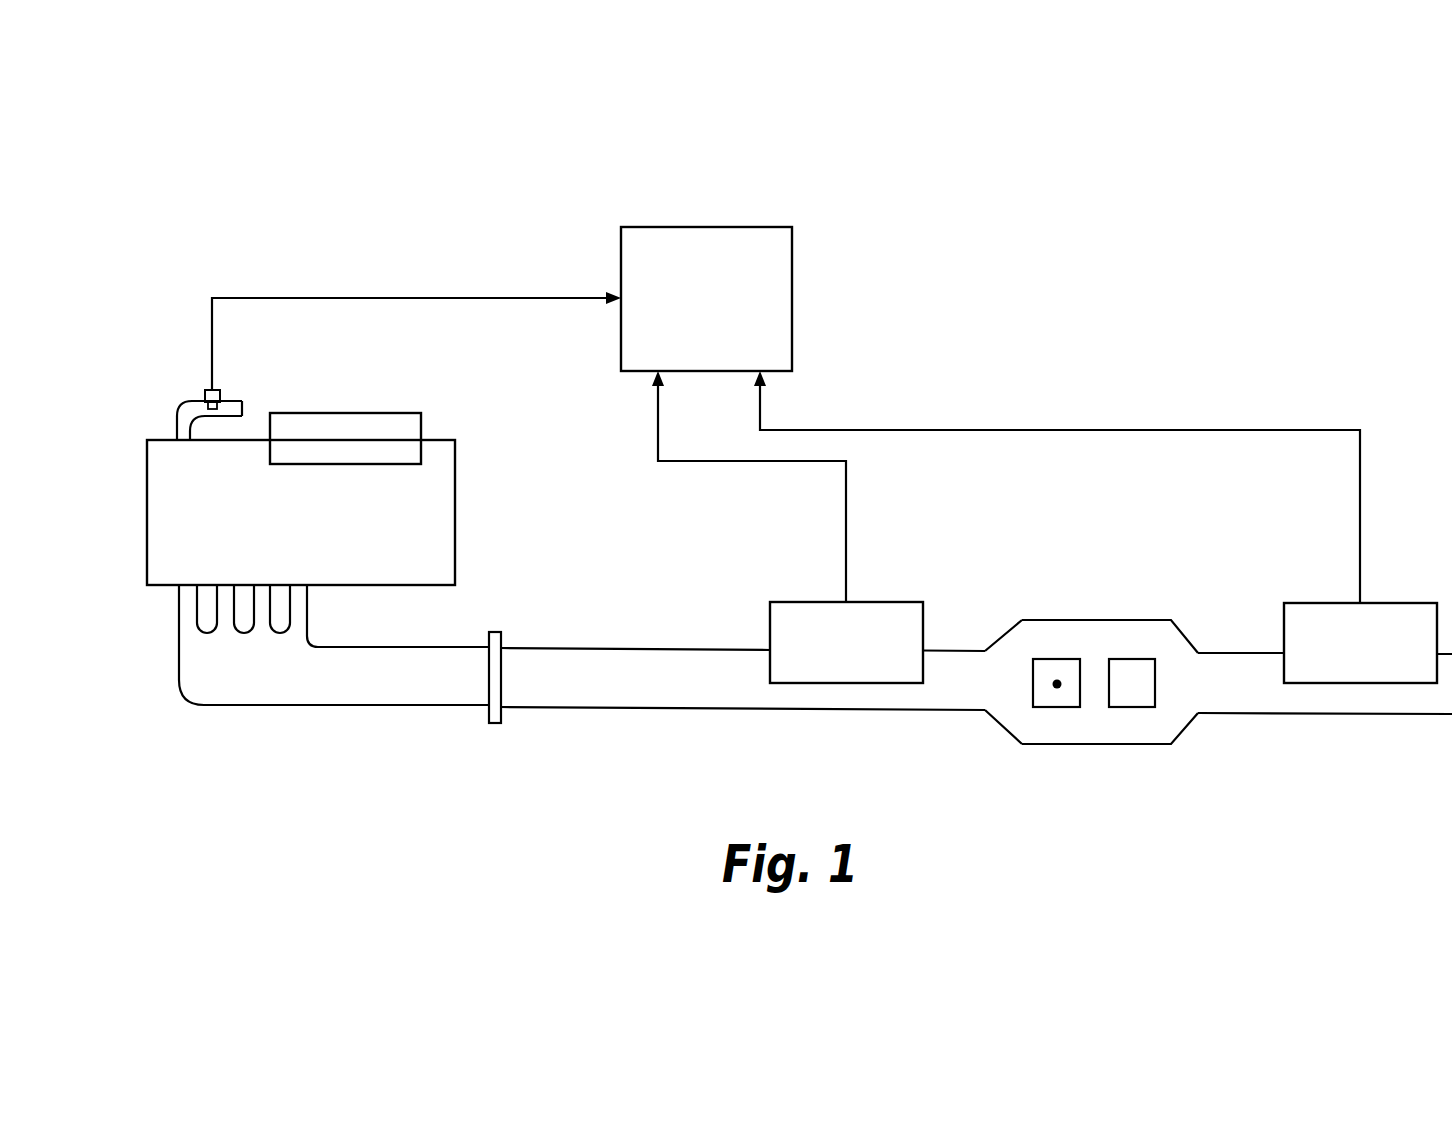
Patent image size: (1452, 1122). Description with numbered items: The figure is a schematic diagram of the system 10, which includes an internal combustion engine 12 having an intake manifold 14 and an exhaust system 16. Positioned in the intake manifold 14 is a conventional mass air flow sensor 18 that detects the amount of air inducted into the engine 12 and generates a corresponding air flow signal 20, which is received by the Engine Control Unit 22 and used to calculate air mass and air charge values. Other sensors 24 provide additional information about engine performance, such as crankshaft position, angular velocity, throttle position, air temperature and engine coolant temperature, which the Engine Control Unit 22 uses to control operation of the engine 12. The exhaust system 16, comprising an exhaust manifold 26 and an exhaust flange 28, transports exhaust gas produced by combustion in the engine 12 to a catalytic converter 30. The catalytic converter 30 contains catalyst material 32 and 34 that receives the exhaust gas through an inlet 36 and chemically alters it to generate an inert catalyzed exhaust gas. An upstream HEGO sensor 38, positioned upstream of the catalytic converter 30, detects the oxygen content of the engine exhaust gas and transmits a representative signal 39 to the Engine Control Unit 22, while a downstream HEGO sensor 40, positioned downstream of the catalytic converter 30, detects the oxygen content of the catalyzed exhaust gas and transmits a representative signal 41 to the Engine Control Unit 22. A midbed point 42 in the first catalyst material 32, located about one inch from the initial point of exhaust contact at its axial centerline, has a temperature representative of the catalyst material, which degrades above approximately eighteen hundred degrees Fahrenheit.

The system 10 is at (1165, 274).
The internal combustion engine 12 is at (455, 500).
The intake manifold 14 is at (237, 396).
The exhaust system 16 is at (552, 708).
The mass air flow sensor 18 is at (215, 388).
The air flow signal 20 is at (362, 298).
The Engine Control Unit 22 is at (745, 227).
The other sensors 24 is at (377, 413).
The exhaust manifold 26 is at (358, 647).
The exhaust flange 28 is at (495, 632).
The catalytic converter 30 is at (1140, 620).
The first catalyst material 32 is at (1057, 707).
The catalyst material 34 is at (1132, 707).
The inlet 36 is at (977, 650).
The upstream heated exhaust gas oxygen (HEGO) sensor 38 is at (883, 602).
The representative signal 39 is at (846, 497).
The downstream HEGO sensor 40 is at (1407, 603).
The representative signal 41 is at (1360, 472).
The midbed point 42 is at (1057, 681).